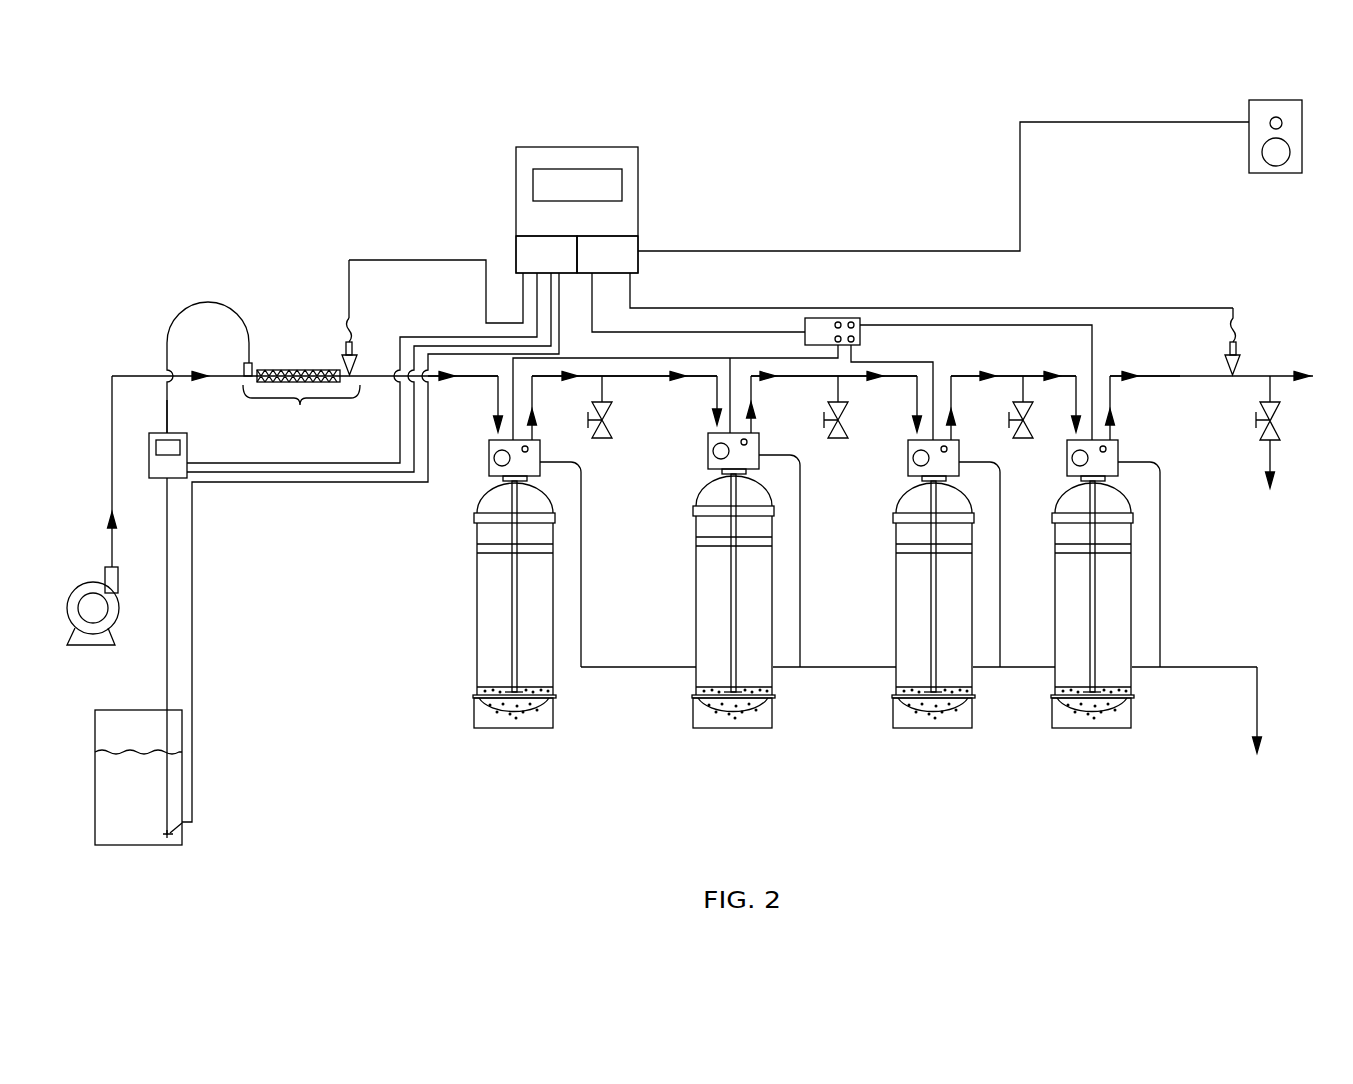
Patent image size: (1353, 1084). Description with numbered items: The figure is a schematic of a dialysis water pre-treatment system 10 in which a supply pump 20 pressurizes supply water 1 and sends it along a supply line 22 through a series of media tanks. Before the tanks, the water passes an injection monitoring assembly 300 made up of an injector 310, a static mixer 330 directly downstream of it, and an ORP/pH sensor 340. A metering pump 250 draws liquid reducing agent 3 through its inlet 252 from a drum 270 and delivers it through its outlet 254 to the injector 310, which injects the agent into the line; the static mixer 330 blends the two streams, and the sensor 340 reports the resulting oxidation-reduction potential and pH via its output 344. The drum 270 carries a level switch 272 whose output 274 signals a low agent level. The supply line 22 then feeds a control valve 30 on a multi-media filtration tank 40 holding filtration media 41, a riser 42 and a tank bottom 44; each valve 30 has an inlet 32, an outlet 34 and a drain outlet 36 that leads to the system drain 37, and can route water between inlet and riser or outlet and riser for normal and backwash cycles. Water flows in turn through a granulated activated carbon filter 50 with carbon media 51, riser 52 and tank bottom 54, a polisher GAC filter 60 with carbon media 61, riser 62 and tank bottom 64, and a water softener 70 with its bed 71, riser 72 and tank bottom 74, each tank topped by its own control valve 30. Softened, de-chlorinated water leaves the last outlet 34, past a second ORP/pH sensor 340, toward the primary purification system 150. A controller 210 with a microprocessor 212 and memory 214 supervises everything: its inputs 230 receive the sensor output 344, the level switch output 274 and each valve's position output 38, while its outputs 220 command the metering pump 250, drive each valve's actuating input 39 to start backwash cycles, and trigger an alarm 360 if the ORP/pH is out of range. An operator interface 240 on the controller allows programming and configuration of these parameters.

The supply water 1 is at (112, 487).
The reducing agent 3 is at (130, 815).
The pre-treatment system 10 is at (522, 832).
The supply pump 20 is at (85, 630).
The supply line 22 is at (132, 376).
The control valve 30 is at (488, 465).
The inlet 32 is at (492, 440).
The outlet 34 is at (536, 440).
The drain outlet 36 is at (545, 465).
The system drain 37 is at (1272, 460).
The output 38 is at (810, 373).
The actuating input 39 is at (510, 380).
The multi-media filtration tank 40 is at (509, 602).
The filtration media 41 is at (481, 646).
The riser 42 is at (512, 608).
The tank bottom 44 is at (547, 690).
The granulated activated carbon filter 50 is at (703, 607).
The carbon media 51 is at (701, 650).
The riser 52 is at (733, 598).
The tank bottom 54 is at (695, 697).
The polisher GAC filter 60 is at (903, 609).
The carbon media 61 is at (903, 656).
The riser 62 is at (933, 600).
The tank bottom 64 is at (895, 697).
The water softener 70 is at (1062, 608).
The fourth treatment media 71 is at (1063, 665).
The riser 72 is at (1090, 572).
The tank bottom 74 is at (1056, 692).
The primary purification system 150 is at (1283, 373).
The controller 210 is at (542, 191).
The microprocessor 212 is at (529, 266).
The memory 214 is at (590, 266).
The outputs 220 is at (680, 251).
The inputs 230 is at (486, 300).
The operator interface 240 is at (590, 169).
The metering pump 250 is at (156, 433).
The inlet 252 is at (165, 478).
The outlet 254 is at (172, 433).
The drum 270 is at (162, 809).
The level switch 272 is at (172, 835).
The output 274 is at (190, 818).
The injection monitoring assembly 300 is at (762, 370).
The injector 310 is at (250, 363).
The static mixer 330 is at (290, 370).
The ORP/pH sensor 340 is at (354, 360).
The output 344 is at (352, 302).
The alarm 360 is at (1248, 112).